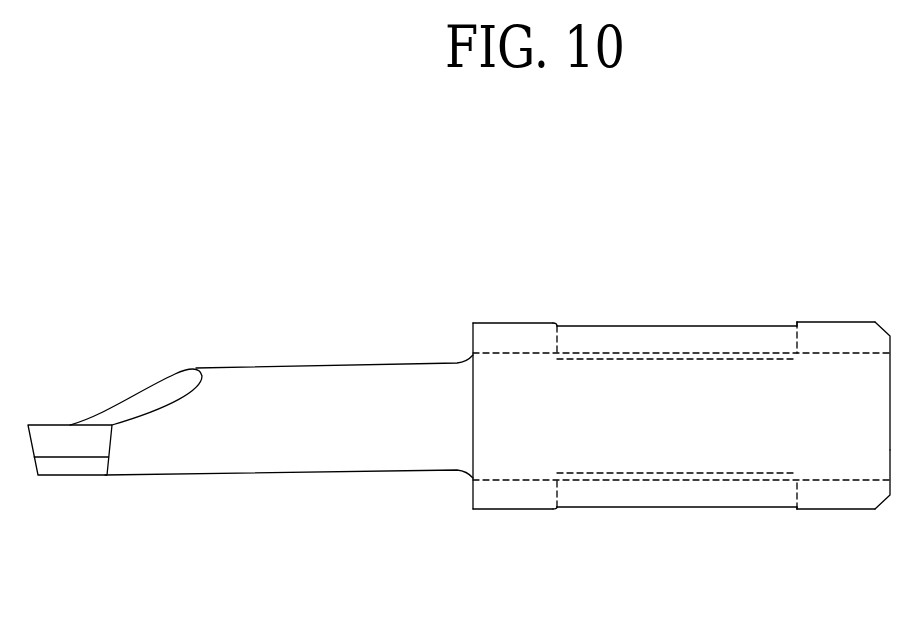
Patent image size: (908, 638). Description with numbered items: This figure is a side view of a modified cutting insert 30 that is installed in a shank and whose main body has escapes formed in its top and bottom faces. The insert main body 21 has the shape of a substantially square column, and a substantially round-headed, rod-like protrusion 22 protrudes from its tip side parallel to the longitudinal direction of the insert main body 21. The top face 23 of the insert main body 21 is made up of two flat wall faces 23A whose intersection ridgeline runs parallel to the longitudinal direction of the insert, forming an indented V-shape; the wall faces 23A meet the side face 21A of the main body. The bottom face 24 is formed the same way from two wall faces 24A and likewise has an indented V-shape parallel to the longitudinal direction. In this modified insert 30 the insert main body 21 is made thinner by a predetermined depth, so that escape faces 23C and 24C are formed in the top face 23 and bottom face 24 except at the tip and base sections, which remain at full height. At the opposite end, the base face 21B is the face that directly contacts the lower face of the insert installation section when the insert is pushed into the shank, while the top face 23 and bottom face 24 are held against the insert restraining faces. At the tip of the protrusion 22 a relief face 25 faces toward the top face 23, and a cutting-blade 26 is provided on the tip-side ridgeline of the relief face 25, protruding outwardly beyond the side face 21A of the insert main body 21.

The insert 30 is at (509, 227).
The insert main body 21 is at (604, 310).
The side face 21A is at (884, 393).
The base face 21B is at (890, 450).
The protrusion 22 is at (295, 353).
The top face 23 is at (509, 330).
The wall face 23A is at (540, 328).
The escape face 23C is at (682, 330).
The bottom face 24 is at (512, 507).
The wall face 24A is at (540, 510).
The escape face 24C is at (680, 505).
The relief face 25 is at (70, 425).
The cutting-blade 26 is at (30, 425).